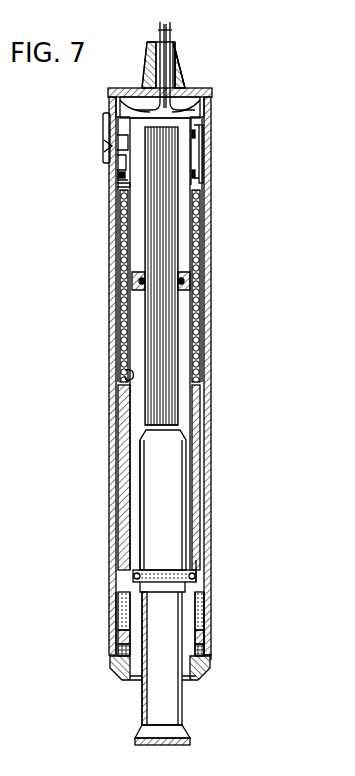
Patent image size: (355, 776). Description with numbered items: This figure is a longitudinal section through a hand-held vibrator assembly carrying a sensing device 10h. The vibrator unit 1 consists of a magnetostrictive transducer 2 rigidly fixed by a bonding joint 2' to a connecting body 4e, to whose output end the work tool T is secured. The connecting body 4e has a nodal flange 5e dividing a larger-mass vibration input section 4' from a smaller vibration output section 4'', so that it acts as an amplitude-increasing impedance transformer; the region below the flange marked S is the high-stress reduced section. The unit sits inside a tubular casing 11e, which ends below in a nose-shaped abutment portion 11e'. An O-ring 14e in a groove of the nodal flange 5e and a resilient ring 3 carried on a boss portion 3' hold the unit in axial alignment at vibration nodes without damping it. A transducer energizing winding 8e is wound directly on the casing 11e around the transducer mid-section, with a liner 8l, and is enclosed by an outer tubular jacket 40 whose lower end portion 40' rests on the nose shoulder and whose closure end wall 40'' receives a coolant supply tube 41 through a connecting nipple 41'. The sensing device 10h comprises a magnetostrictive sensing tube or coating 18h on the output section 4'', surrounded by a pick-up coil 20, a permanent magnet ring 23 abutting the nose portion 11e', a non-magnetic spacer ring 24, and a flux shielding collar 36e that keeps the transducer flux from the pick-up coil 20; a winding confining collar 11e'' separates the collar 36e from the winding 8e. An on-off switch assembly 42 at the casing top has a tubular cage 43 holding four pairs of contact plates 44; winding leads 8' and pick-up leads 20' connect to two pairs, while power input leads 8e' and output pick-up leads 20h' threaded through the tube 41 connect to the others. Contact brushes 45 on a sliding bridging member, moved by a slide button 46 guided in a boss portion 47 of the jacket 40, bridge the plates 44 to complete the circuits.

The vibrator unit 1 is at (133, 246).
The magnetostrictive transducer 2 is at (123, 276).
The bonding joint 2' is at (128, 420).
The resilient ring 3 is at (130, 292).
The boss portion 3' is at (109, 273).
The vibration input section 4' is at (163, 500).
The vibration output section 4'' is at (136, 658).
The connecting body 4e is at (143, 475).
The nodal flange 5e is at (136, 570).
The winding leads 8' is at (102, 183).
The transducer energizing winding 8e is at (180, 15).
The power input leads 8e' is at (158, 103).
The liner 8l is at (118, 346).
The sensing device 10h is at (101, 602).
The tubular casing 11e is at (100, 378).
The nose-shaped abutment portion 11e' is at (162, 670).
The winding confining collar 11e'' is at (223, 477).
The O-ring 14e is at (200, 575).
The magnetostrictive sensing tube or coating 18h is at (146, 690).
The pick-up coil 20 is at (135, 611).
The pick-up leads 20' is at (135, 286).
The output pick-up leads 20h' is at (156, 55).
The permanent magnet ring 23 is at (118, 648).
The spacer ring 24 is at (118, 630).
The flux shielding collar 36e is at (120, 510).
The outer tubular jacket 40 is at (175, 376).
The jacket lower end portion 40' is at (222, 654).
The closure end wall 40'' is at (176, 91).
The coolant supply tube 41 is at (170, 55).
The connecting nipple 41' is at (192, 63).
The on-off switch assembly 42 is at (86, 144).
The tubular cage 43 is at (207, 152).
The contact plates 44 is at (212, 135).
The contact brushes 45 is at (116, 165).
The slide button 46 is at (98, 148).
The boss portion 47 is at (103, 128).
The stem S is at (162, 658).
The work tool T is at (134, 739).